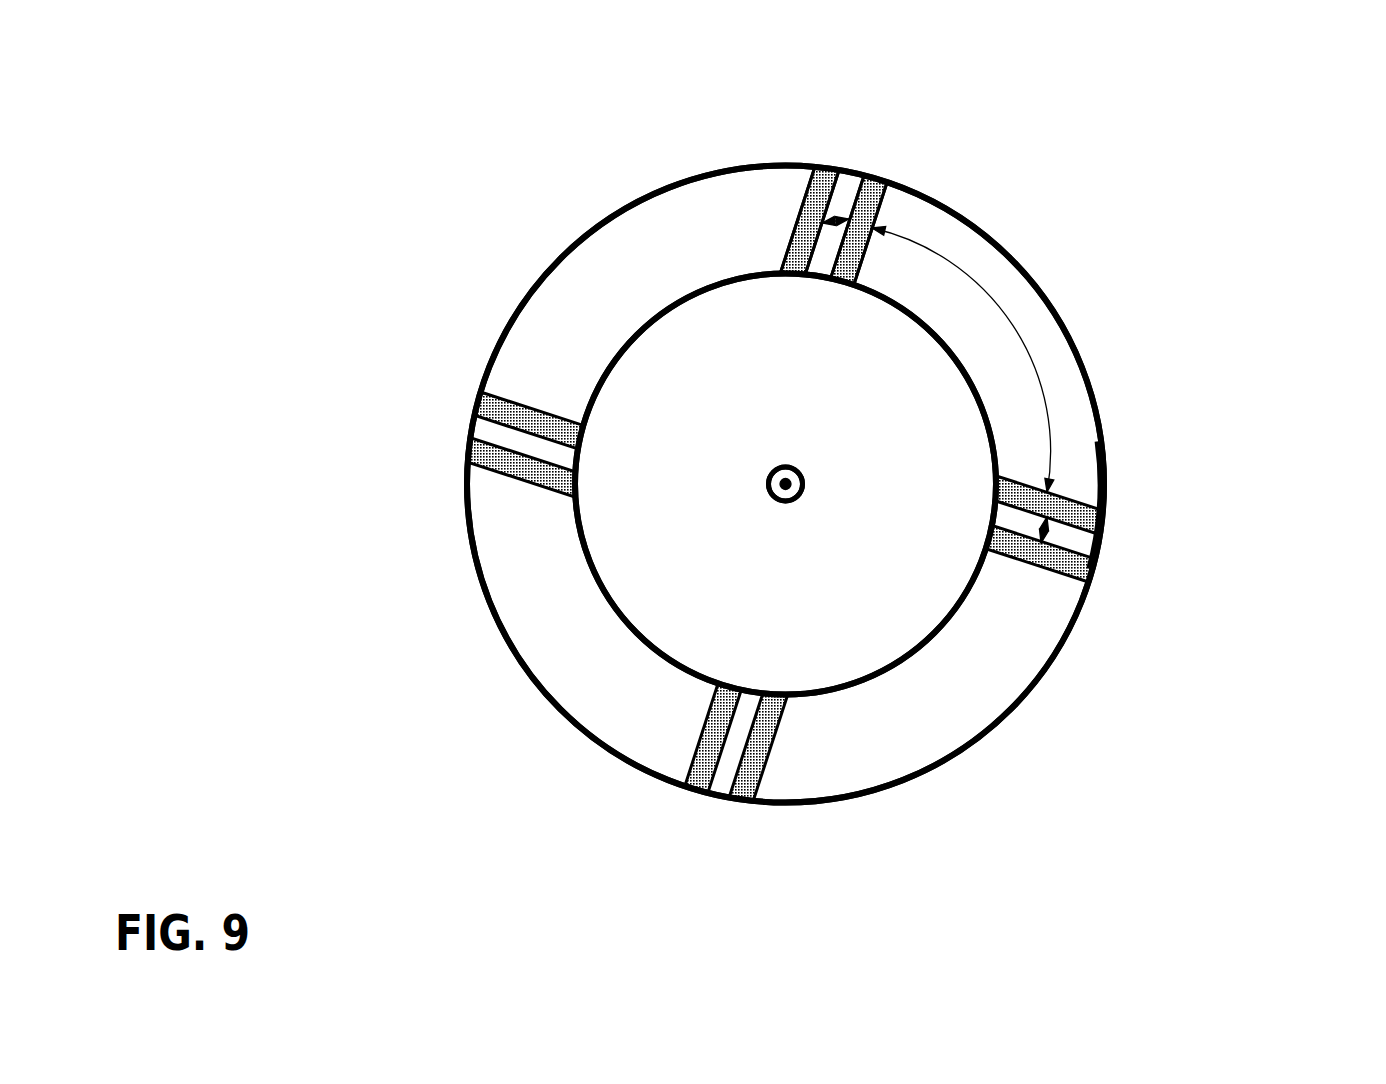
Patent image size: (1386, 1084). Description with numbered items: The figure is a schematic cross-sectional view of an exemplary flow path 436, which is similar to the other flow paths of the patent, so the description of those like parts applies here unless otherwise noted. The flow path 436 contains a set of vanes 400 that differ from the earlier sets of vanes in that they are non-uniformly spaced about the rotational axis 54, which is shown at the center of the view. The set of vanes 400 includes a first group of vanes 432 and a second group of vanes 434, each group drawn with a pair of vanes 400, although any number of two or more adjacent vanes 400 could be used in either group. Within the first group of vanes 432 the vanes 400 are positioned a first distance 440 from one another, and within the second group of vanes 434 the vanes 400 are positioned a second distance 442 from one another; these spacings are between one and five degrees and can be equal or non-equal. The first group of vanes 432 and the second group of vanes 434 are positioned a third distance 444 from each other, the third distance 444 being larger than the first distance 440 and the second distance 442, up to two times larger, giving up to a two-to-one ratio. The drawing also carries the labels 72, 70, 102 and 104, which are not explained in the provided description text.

The flow path 436 is at (384, 120).
The outer ring 72 is at (583, 233).
The inner ring 70 is at (597, 387).
The rotational axis 54 is at (804, 478).
The first group of vanes 432 is at (800, 187).
The set of vanes 400 is at (880, 204).
The inner end of fin 102 is at (784, 266).
The outer end of fin 104 is at (829, 167).
The first distance 440 is at (846, 220).
The second distance 442 is at (1044, 532).
The third distance 444 is at (1033, 363).
The second group of vanes 434 is at (1115, 520).